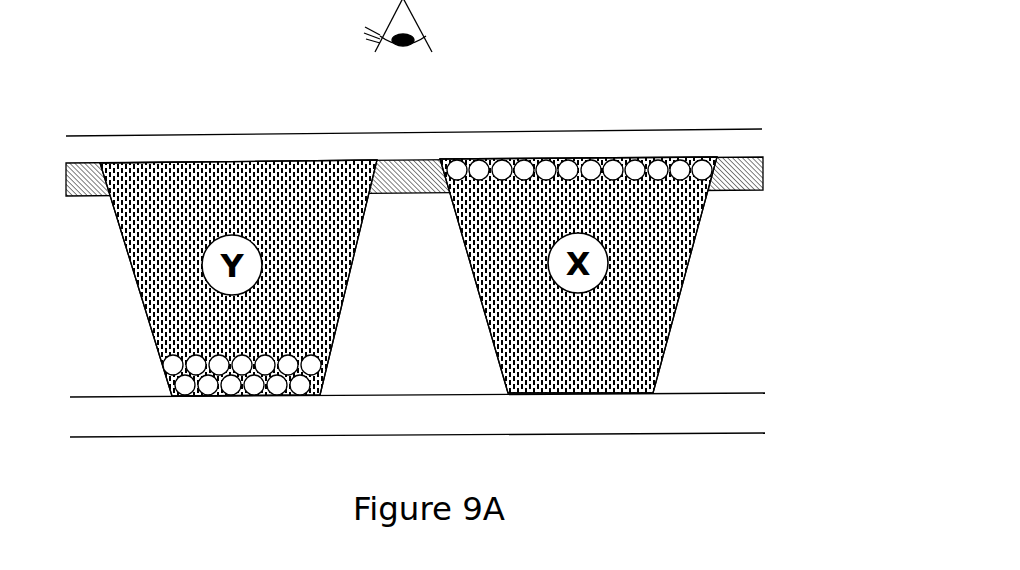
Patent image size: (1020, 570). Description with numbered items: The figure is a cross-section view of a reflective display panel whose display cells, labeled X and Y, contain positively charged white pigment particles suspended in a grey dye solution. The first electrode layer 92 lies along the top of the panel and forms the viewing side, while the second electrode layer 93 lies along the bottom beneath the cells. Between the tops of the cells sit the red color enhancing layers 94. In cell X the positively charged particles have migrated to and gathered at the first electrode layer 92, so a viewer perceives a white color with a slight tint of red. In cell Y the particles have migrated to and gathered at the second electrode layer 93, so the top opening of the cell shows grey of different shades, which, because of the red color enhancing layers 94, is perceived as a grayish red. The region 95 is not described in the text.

The first electrode layer 92 is at (657, 145).
The second electrode layer 93 is at (717, 407).
The color enhancing layer 94 is at (772, 173).
The gap between cells 95 is at (425, 320).